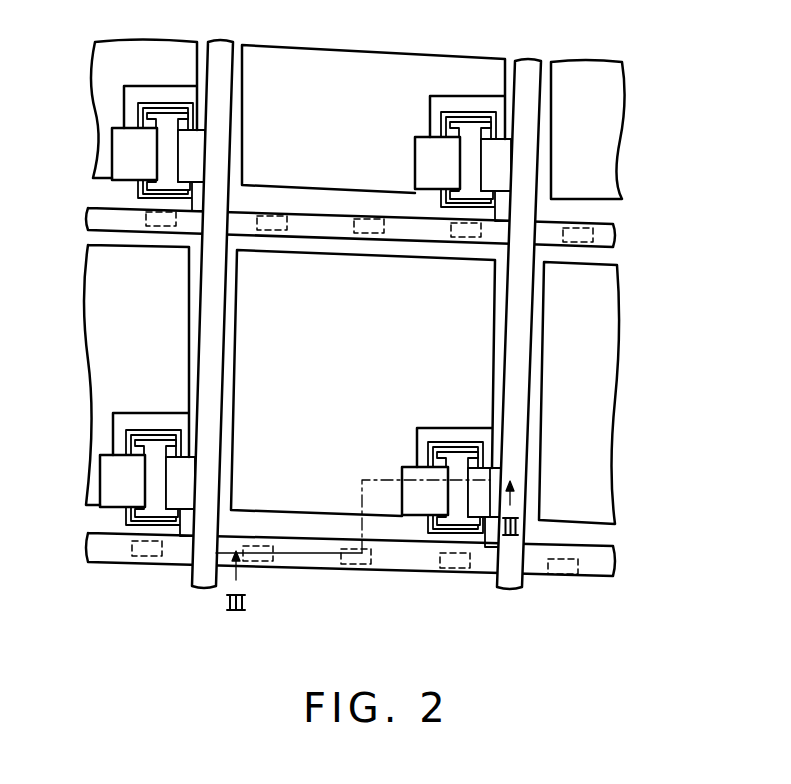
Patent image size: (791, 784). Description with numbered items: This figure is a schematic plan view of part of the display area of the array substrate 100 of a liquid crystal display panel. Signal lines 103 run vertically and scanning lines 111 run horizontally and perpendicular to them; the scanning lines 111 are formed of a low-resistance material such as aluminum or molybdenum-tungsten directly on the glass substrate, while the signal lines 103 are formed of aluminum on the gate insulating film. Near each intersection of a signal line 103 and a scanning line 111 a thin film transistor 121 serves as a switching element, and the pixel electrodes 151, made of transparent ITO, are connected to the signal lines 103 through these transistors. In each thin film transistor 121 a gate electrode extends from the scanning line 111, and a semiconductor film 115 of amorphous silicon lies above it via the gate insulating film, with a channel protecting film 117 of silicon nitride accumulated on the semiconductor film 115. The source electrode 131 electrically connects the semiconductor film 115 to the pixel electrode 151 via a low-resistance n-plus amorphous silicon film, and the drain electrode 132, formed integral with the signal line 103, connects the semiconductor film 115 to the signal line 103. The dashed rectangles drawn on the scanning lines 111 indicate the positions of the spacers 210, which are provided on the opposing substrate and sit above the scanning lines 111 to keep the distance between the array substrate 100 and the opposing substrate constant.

The array substrate 100 is at (641, 175).
The signal line 103 is at (197, 573).
The scanning line 111 is at (88, 218).
The semiconductor film 115 is at (483, 550).
The channel protecting film 117 is at (437, 537).
The thin film transistor 121 is at (431, 432).
The source electrode 131 is at (406, 468).
The drain electrode 132 is at (482, 472).
The pixel electrode 151 is at (303, 263).
The spacer 210 is at (135, 542).